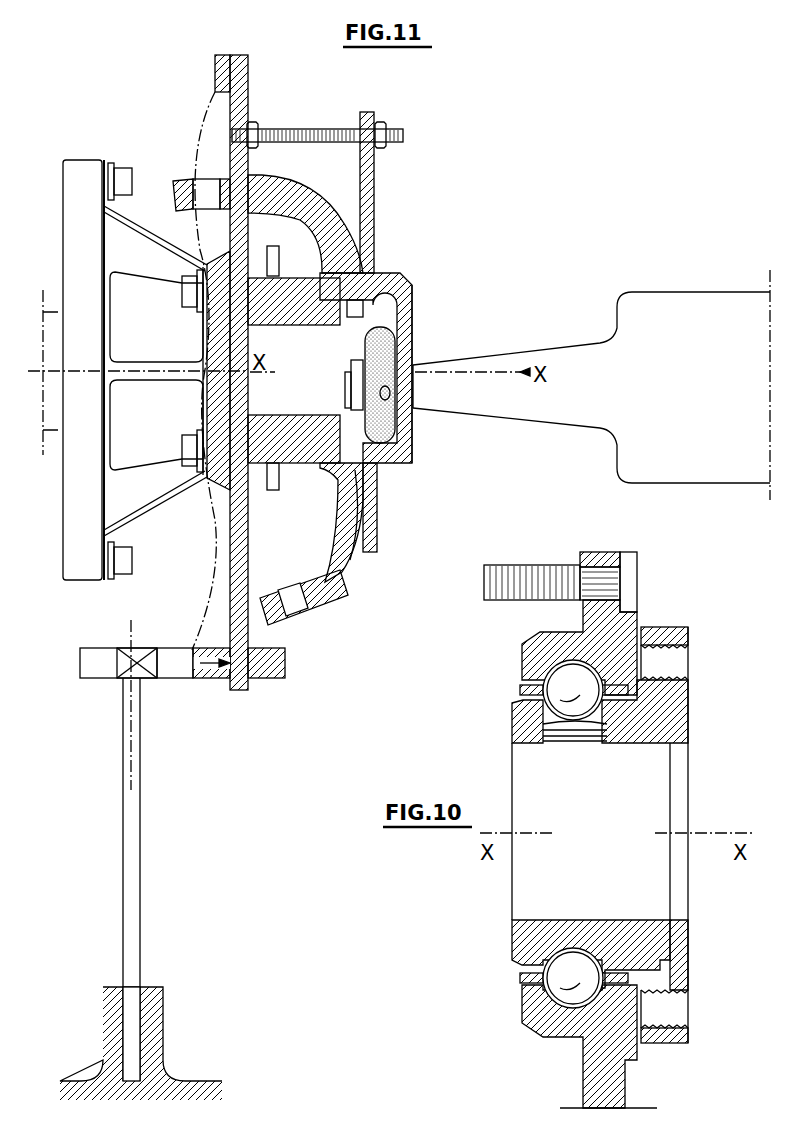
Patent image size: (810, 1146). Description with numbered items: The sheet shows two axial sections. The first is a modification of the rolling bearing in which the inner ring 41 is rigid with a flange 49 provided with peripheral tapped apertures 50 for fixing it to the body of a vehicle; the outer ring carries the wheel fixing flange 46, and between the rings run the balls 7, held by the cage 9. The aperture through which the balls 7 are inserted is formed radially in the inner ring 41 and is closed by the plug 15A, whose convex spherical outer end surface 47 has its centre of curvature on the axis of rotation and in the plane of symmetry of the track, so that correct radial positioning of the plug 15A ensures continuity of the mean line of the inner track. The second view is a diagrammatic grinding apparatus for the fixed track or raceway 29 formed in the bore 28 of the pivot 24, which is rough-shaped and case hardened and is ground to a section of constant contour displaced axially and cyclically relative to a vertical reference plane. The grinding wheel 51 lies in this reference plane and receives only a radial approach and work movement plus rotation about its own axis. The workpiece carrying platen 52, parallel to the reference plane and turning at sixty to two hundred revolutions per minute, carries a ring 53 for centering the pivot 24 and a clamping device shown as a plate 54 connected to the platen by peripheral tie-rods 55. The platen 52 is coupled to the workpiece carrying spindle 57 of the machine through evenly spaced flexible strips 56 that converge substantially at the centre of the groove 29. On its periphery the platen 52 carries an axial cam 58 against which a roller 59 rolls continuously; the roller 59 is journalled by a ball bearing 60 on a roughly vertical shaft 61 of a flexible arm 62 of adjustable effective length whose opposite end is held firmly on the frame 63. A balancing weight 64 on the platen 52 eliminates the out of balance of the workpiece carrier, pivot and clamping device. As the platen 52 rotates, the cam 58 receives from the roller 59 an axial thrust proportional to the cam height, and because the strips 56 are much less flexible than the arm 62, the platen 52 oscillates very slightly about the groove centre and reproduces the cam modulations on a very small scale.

In FIG. 11, the workpiece carrying platen 52 is at (249, 104).
In FIG. 11, the peripheral tie-rods 55 is at (322, 128).
In FIG. 11, the pivot 24 is at (343, 230).
In FIG. 11, the plate 54 is at (376, 228).
In FIG. 11, the bore 28 is at (376, 292).
In FIG. 11, the fixed track or raceway 29 is at (407, 310).
In FIG. 11, the grinding wheel 51 is at (397, 343).
In FIG. 11, the ring 53 is at (287, 425).
In FIG. 11, the workpiece carrying spindle 57 is at (62, 320).
In FIG. 11, the flexible strips 56 is at (148, 466).
In FIG. 11, the axial cam 58 is at (202, 648).
In FIG. 11, the ball bearing 60 is at (124, 665).
In FIG. 11, the roller 59 is at (165, 680).
In FIG. 11, the balancing weight 64 is at (288, 665).
In FIG. 11, the shaft 61 is at (130, 748).
In FIG. 11, the flexible arm 62 is at (140, 855).
In FIG. 11, the frame 63 is at (165, 1075).
In FIG. 10, the wheel fixing flange 46 is at (600, 556).
In FIG. 10, the peripheral tapped apertures 50 is at (665, 648).
In FIG. 10, the cage 9 is at (522, 690).
In FIG. 10, the flange 49 is at (688, 712).
In FIG. 10, the plug 15A is at (553, 743).
In FIG. 10, the convex spherical outer end surface 47 is at (577, 735).
In FIG. 10, the balls 7 is at (582, 720).
In FIG. 10, the inner ring 41 is at (638, 722).